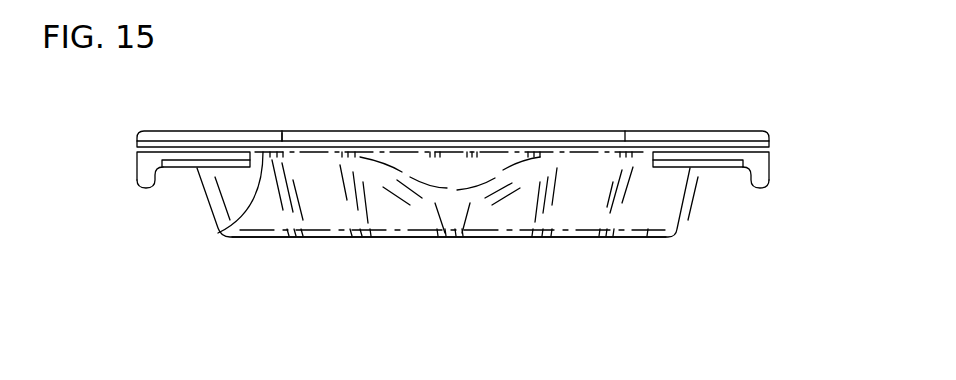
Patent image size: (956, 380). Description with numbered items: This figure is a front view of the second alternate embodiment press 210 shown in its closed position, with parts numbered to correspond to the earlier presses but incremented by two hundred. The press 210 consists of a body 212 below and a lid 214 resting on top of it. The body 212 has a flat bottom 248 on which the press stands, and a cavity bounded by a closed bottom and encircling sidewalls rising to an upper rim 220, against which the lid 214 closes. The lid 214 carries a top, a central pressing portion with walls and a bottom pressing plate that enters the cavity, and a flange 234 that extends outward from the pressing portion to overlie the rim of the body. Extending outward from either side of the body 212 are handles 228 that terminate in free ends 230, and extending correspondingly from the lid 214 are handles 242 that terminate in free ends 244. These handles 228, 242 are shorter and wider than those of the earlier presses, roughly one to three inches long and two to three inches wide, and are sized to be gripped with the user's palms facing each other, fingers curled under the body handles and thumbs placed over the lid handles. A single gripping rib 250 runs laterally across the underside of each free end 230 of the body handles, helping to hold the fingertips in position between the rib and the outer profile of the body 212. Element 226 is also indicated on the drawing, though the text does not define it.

The press 210 is at (200, 250).
The body 212 is at (607, 212).
The lid 214 is at (469, 130).
The upper rim 220 is at (220, 230).
The central depression 226 is at (452, 152).
The handles 228 is at (162, 170).
The free ends 230 is at (137, 156).
The flange 234 is at (268, 140).
The handles 242 is at (177, 130).
The free ends 244 is at (137, 140).
The flat bottom 248 is at (278, 239).
The gripping rib 250 is at (142, 189).